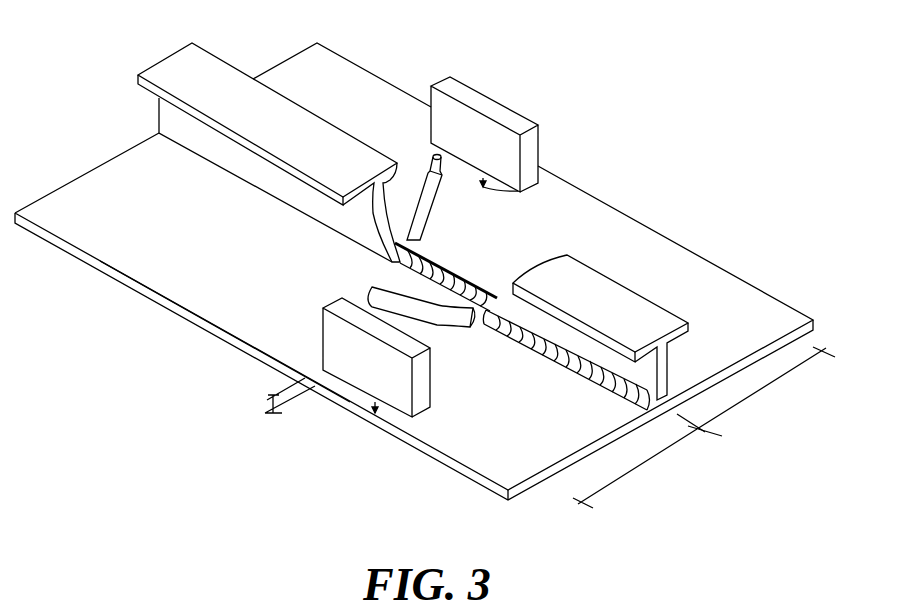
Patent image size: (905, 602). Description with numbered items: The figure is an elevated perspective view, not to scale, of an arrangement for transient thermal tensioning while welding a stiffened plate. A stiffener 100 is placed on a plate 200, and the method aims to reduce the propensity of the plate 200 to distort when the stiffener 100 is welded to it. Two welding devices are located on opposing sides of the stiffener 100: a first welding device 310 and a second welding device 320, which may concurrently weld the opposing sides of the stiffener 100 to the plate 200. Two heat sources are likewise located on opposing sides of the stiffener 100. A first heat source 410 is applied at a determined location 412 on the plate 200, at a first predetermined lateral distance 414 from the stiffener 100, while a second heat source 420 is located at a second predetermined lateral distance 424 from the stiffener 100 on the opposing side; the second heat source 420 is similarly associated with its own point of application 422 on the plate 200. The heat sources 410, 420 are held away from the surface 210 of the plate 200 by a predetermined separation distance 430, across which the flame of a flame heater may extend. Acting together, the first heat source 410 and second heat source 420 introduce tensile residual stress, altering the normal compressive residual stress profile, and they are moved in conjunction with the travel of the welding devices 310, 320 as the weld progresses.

The stiffener 100 is at (159, 115).
The plate 200 is at (127, 282).
The surface of the plate 210 is at (225, 331).
The first welding device 310 is at (375, 287).
The second welding device 320 is at (424, 242).
The first heat source 410 is at (323, 305).
The location on the plate 412 is at (375, 413).
The first predetermined lateral distance 414 is at (640, 461).
The second heat source 420 is at (433, 84).
The pressing point of second block 422 is at (538, 165).
The second predetermined lateral distance 424 is at (760, 379).
The predetermined separation distance 430 is at (262, 405).